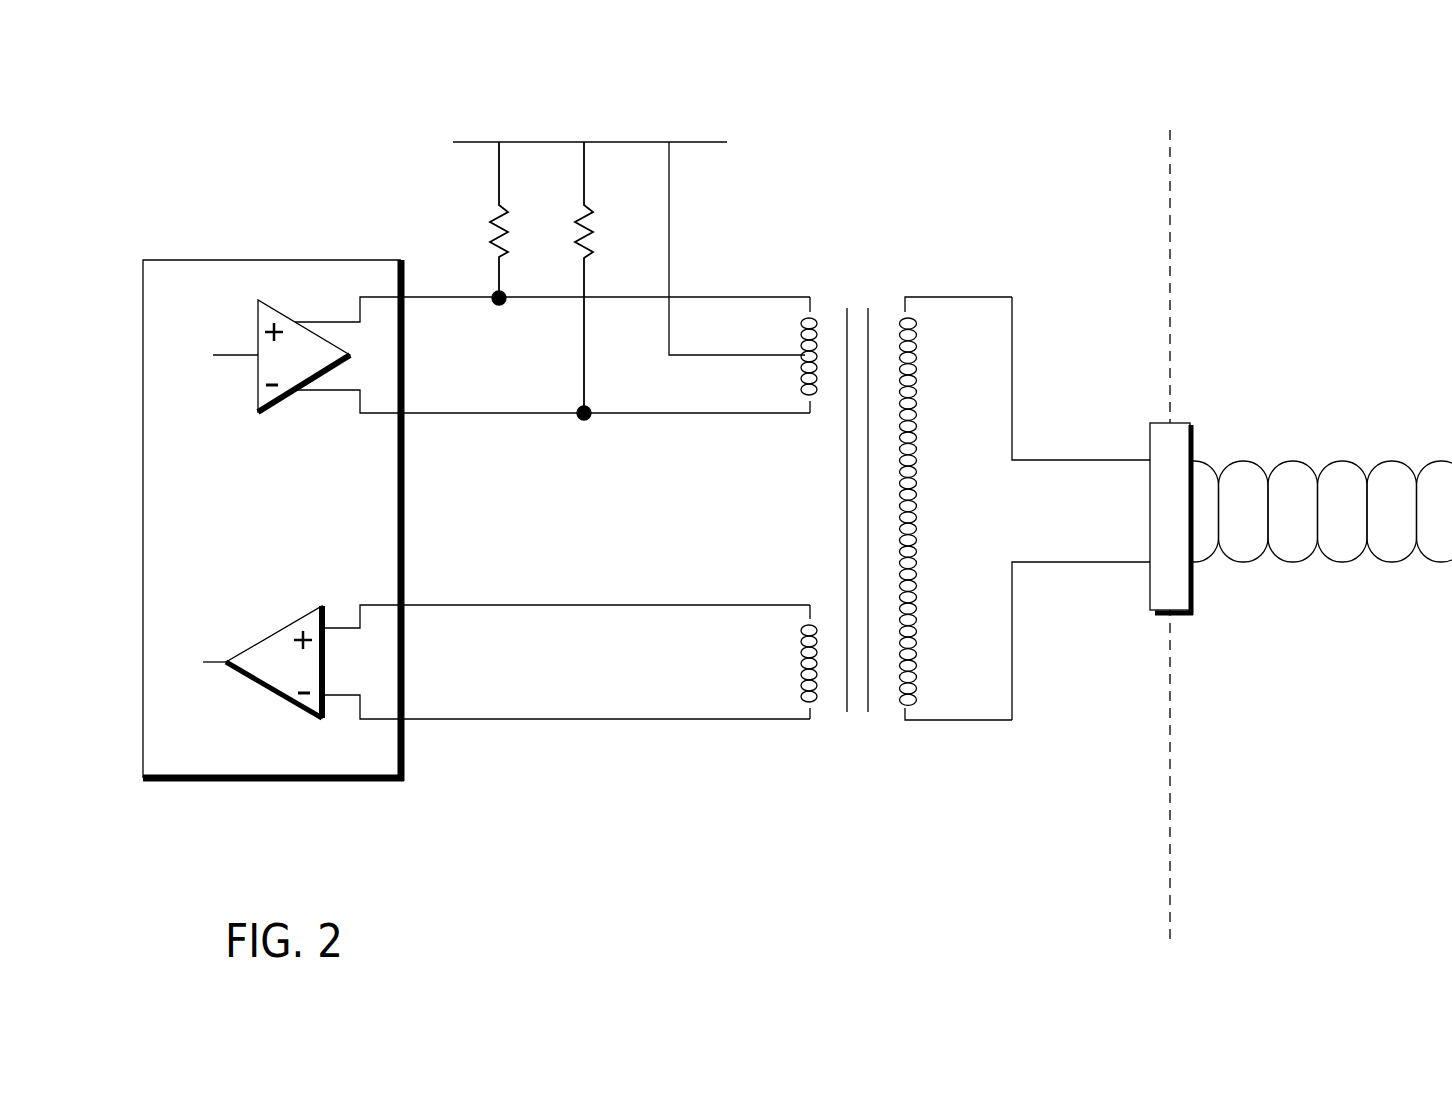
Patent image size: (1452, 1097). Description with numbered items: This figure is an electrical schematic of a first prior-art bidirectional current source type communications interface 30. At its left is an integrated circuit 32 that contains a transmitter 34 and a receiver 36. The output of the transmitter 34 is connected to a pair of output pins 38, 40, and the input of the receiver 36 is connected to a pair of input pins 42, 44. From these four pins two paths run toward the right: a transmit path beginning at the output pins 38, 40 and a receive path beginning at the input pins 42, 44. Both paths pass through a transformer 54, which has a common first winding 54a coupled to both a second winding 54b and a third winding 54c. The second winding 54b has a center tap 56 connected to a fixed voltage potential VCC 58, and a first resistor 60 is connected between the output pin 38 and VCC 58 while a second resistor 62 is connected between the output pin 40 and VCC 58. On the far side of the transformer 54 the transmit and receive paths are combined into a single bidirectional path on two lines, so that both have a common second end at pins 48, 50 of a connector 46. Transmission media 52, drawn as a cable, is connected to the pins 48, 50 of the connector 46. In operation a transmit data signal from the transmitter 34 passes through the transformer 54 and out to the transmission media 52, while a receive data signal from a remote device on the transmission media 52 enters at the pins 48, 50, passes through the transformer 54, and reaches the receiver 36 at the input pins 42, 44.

The bidirectional current source type communications interface 30 is at (1080, 180).
The integrated circuit 32 is at (270, 782).
The transmitter 34 is at (277, 306).
The receiver 36 is at (272, 628).
The output pin 38 is at (405, 302).
The output pin 40 is at (405, 410).
The input pin 42 is at (405, 610).
The input pin 44 is at (405, 716).
The connector 46 is at (1148, 602).
The pin 48 is at (1148, 462).
The pin 50 is at (1148, 561).
The transmission media 52 is at (1265, 462).
The transformer 54 is at (862, 749).
The first winding 54a is at (903, 298).
The second winding 54b is at (815, 298).
The third winding 54c is at (815, 605).
The center tap 56 is at (740, 356).
The fixed voltage potential VCC 58 is at (660, 142).
The first resistor 60 is at (499, 183).
The second resistor 62 is at (584, 183).